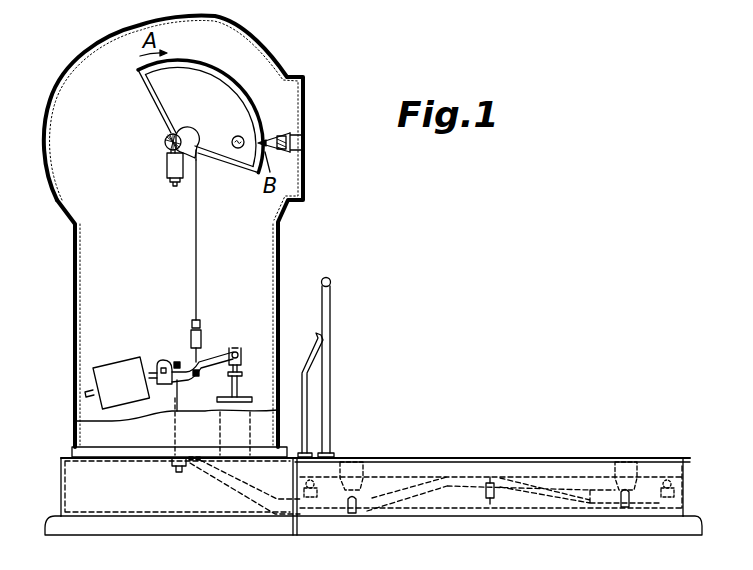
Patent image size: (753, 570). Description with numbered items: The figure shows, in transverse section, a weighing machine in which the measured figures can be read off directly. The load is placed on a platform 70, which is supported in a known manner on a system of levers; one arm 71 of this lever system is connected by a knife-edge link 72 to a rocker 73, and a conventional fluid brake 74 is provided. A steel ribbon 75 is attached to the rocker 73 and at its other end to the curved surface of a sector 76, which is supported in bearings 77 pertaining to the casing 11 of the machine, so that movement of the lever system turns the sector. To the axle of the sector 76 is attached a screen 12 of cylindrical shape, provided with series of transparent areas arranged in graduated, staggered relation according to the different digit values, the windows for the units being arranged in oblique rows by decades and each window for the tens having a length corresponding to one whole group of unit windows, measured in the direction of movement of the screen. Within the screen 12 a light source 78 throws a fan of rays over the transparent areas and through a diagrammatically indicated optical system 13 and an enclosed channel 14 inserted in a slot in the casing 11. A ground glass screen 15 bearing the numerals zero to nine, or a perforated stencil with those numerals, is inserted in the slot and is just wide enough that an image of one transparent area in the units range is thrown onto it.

The casing 11 is at (258, 46).
The screen 12 is at (184, 62).
The optical system 13 is at (283, 134).
The enclosed channel 14 is at (300, 153).
The ground glass screen 15 is at (305, 143).
The platform 70 is at (405, 460).
The arm 71 is at (217, 477).
The knife-edge link 72 is at (176, 398).
The rocker 73 is at (128, 366).
The fluid brake 74 is at (240, 408).
The steel ribbon 75 is at (199, 285).
The sector 76 is at (187, 138).
The bearings 77 is at (166, 150).
The light source 78 is at (237, 150).